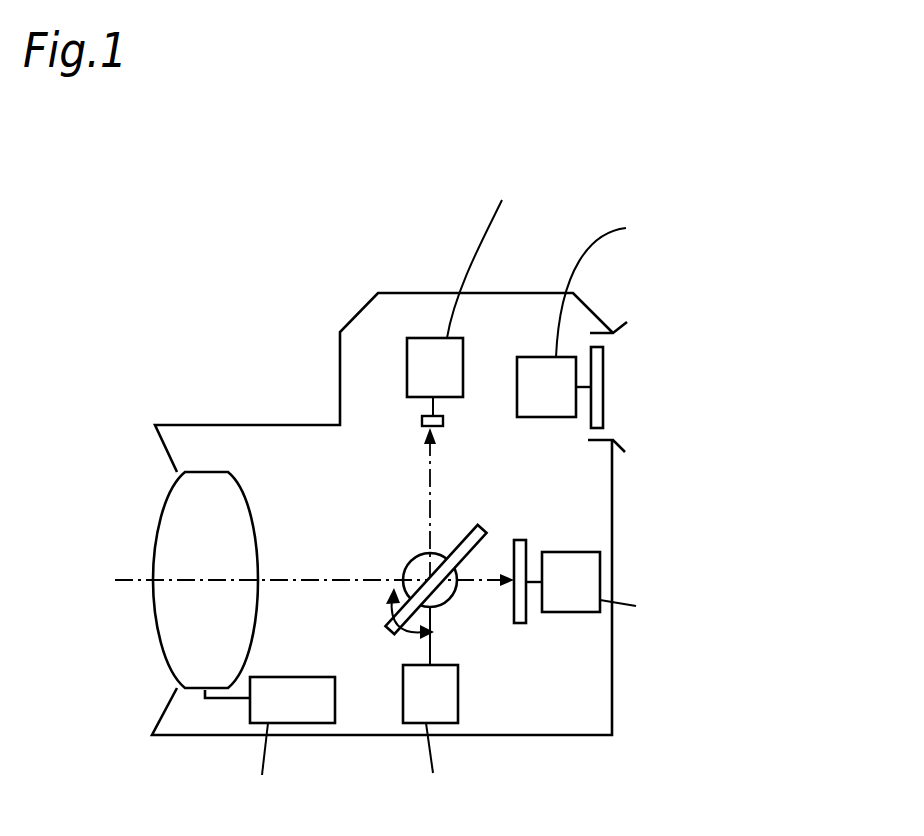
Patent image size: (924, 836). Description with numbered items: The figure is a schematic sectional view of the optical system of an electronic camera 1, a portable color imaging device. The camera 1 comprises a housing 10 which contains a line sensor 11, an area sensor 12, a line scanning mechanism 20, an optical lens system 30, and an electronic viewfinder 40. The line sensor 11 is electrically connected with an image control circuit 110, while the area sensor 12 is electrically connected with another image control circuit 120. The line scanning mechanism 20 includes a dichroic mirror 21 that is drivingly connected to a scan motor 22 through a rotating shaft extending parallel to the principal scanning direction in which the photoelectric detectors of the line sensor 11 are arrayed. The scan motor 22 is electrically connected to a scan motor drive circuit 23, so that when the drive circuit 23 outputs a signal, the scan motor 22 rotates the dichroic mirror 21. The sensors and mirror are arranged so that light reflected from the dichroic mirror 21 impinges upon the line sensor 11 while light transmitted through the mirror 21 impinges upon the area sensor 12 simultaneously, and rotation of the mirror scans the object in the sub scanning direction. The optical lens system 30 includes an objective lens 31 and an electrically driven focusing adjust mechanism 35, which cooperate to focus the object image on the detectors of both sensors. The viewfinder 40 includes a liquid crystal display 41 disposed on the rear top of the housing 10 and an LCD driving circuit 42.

The electronic camera 1 is at (355, 286).
The housing 10 is at (300, 425).
The line sensor 11 is at (444, 421).
The area sensor 12 is at (520, 540).
The line scanning mechanism 20 is at (436, 568).
The dichroic mirror 21 is at (465, 534).
The scan motor 22 is at (453, 605).
The scan motor drive circuit 23 is at (458, 688).
The optical lens system 30 is at (237, 568).
The objective lens 31 is at (258, 606).
The focusing adjust mechanism 35 is at (324, 677).
The electronic viewfinder 40 is at (681, 319).
The liquid crystal display 41 is at (604, 378).
The LCD driving circuit 42 is at (540, 357).
The image control circuit 110 is at (433, 338).
The image control circuit 120 is at (600, 582).